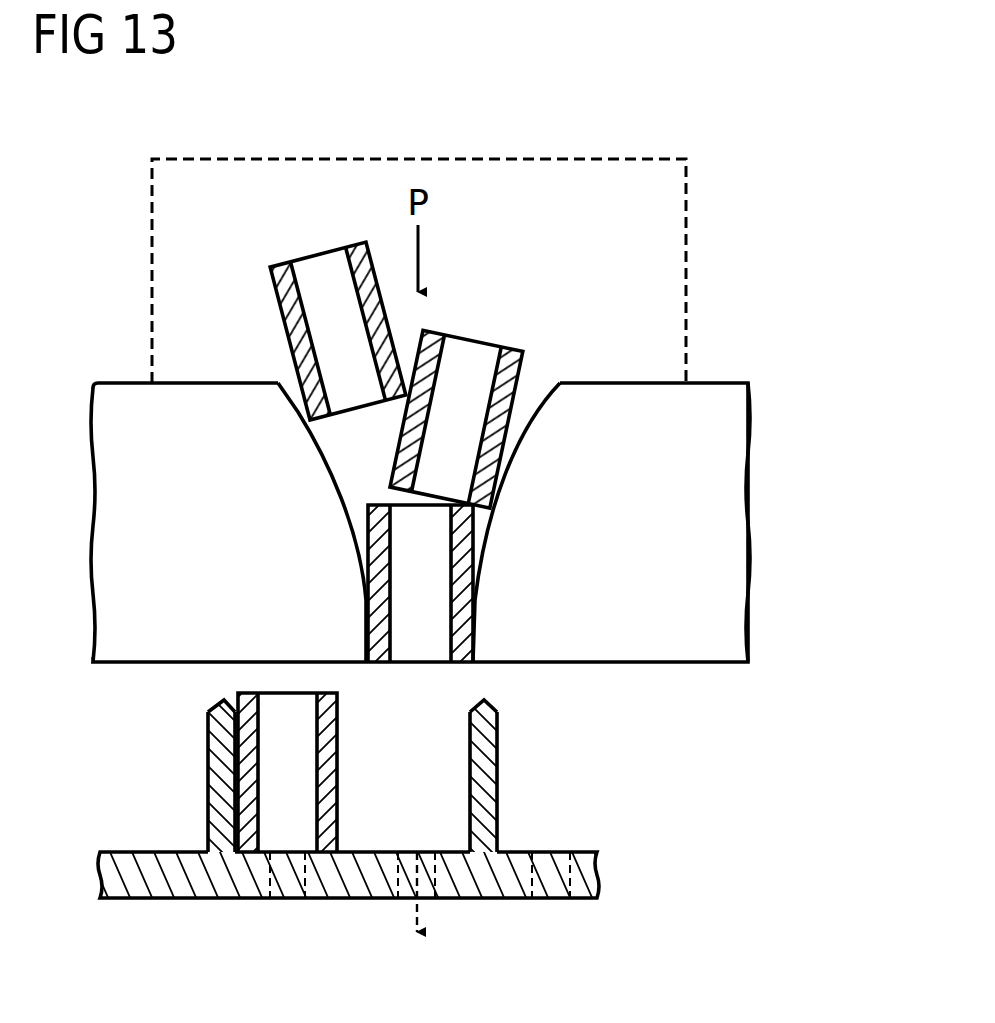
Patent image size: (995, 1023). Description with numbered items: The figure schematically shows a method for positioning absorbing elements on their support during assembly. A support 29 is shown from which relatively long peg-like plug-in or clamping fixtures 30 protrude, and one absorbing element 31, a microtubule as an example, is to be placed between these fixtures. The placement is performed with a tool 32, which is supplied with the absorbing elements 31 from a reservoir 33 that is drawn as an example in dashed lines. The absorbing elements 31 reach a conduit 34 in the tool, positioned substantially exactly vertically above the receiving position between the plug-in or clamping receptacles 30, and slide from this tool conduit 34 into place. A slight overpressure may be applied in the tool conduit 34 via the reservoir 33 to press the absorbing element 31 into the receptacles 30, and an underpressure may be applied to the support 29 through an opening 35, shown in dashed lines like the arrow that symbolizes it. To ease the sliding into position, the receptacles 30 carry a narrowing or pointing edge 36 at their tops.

The support 29 is at (587, 870).
The plug-in or clamping fixture 30 is at (218, 785).
The absorbing element 31 is at (316, 266).
The tool 32 is at (742, 487).
The reservoir 33 is at (686, 218).
The tool conduit 34 is at (347, 467).
The opening 35 is at (430, 900).
The narrowing or pointing edge 36 is at (213, 710).